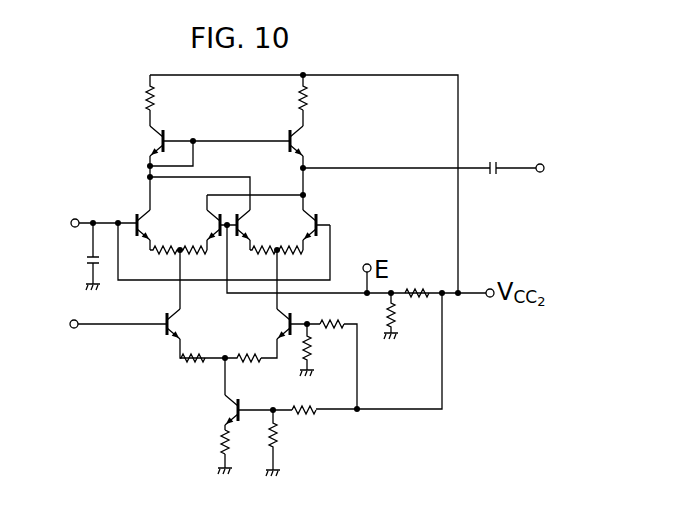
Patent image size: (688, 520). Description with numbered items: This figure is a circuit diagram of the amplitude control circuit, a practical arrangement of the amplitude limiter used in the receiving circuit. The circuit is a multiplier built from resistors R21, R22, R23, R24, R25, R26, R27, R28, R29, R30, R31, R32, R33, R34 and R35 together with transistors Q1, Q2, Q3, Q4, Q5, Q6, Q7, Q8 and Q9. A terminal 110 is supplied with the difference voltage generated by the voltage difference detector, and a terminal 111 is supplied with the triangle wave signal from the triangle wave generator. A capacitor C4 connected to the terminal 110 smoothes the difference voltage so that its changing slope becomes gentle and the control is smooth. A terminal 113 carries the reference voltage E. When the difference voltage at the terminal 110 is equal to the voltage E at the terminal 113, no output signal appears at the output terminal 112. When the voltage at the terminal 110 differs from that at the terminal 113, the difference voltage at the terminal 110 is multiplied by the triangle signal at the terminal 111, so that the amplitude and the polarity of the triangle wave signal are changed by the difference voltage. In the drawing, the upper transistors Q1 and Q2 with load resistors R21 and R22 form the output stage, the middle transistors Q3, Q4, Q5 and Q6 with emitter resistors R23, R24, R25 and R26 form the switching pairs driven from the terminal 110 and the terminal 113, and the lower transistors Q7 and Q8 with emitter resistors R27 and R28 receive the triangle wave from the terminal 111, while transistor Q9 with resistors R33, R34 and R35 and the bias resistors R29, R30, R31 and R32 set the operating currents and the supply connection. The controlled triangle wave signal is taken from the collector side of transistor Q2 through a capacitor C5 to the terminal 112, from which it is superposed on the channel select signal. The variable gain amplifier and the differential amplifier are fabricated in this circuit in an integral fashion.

The terminal 110 is at (82, 213).
The terminal 111 is at (81, 330).
The terminal 112 is at (530, 160).
The terminal 113 is at (368, 262).
The capacitor C4 is at (80, 256).
The capacitor C5 is at (492, 162).
The transistor Q1 is at (159, 141).
The transistor Q2 is at (304, 143).
The transistor Q3 is at (160, 214).
The transistor Q4 is at (211, 222).
The transistor Q5 is at (243, 226).
The transistor Q6 is at (298, 224).
The transistor Q7 is at (174, 327).
The transistor Q8 is at (271, 322).
The transistor Q9 is at (230, 405).
The resistor R21 is at (154, 100).
The resistor R22 is at (309, 100).
The resistor R23 is at (167, 256).
The resistor R24 is at (197, 254).
The resistor R25 is at (278, 252).
The resistor R26 is at (287, 260).
The resistor R27 is at (196, 366).
The resistor R28 is at (242, 367).
The resistor R29 is at (312, 351).
The resistor R30 is at (331, 322).
The resistor R31 is at (398, 312).
The resistor R32 is at (418, 289).
The resistor R33 is at (219, 441).
The resistor R34 is at (281, 443).
The resistor R35 is at (306, 418).